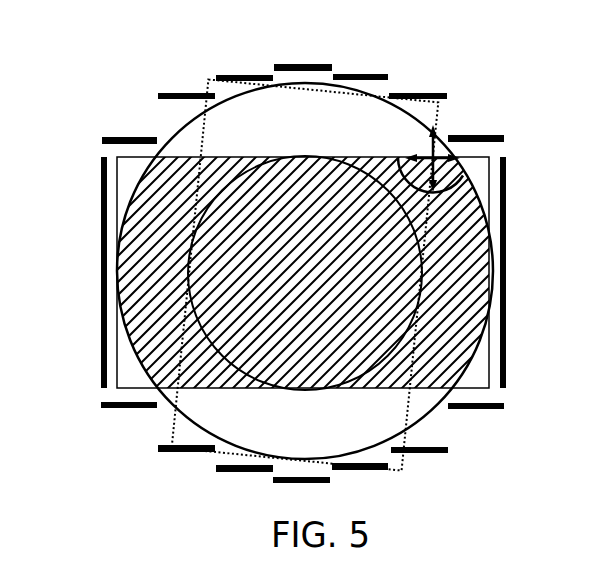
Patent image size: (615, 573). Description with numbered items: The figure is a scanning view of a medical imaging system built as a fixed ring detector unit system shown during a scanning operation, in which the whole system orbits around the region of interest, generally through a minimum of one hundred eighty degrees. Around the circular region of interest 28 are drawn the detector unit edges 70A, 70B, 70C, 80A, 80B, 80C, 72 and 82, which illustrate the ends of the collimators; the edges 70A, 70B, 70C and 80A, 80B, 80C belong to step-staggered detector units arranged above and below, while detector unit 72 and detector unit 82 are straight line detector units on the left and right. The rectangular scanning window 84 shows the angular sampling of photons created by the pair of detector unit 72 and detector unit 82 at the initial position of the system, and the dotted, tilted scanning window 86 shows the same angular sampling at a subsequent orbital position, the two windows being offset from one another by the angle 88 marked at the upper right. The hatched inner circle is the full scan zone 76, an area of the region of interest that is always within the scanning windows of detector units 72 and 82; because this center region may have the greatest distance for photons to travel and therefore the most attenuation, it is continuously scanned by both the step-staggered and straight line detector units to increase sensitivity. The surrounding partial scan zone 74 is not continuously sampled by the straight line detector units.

The wafer 28 is at (176, 410).
The detector unit 72 is at (507, 236).
The partial scan zone 74 is at (298, 112).
The full scan zone 76 is at (205, 258).
The detector unit edge 70A is at (483, 135).
The detector unit edge 70B is at (438, 93).
The detector unit edge 70C is at (376, 74).
The detector unit edge 80A is at (505, 406).
The detector unit edge 80B is at (449, 450).
The detector unit edge 80C is at (384, 474).
The detector unit 82 is at (100, 200).
The scanning window 84 is at (473, 382).
The scanning window 86 is at (215, 453).
The angle 88 is at (445, 173).